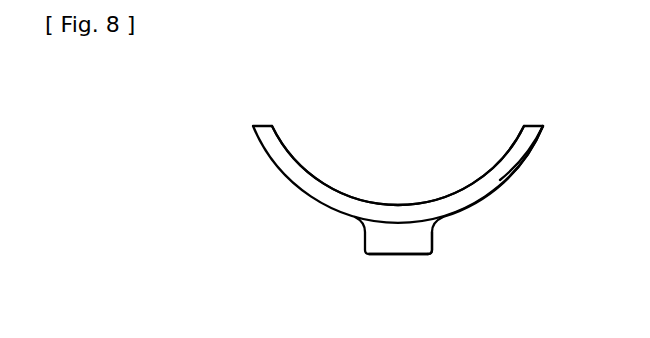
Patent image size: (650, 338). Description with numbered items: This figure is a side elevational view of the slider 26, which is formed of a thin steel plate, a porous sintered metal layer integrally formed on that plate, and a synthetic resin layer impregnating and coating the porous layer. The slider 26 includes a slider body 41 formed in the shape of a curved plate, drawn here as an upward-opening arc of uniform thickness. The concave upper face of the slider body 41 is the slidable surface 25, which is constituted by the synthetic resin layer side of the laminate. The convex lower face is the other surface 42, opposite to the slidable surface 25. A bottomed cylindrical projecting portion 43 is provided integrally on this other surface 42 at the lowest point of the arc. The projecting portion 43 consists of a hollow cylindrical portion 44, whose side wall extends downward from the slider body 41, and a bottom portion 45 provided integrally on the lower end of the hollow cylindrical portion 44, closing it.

The slidable surface 25 is at (306, 171).
The slider 26 is at (530, 198).
The slider body 41 is at (284, 165).
The other surface 42 is at (473, 205).
The projecting portion 43 is at (363, 247).
The hollow cylindrical portion 44 is at (428, 239).
The bottom portion 45 is at (398, 256).